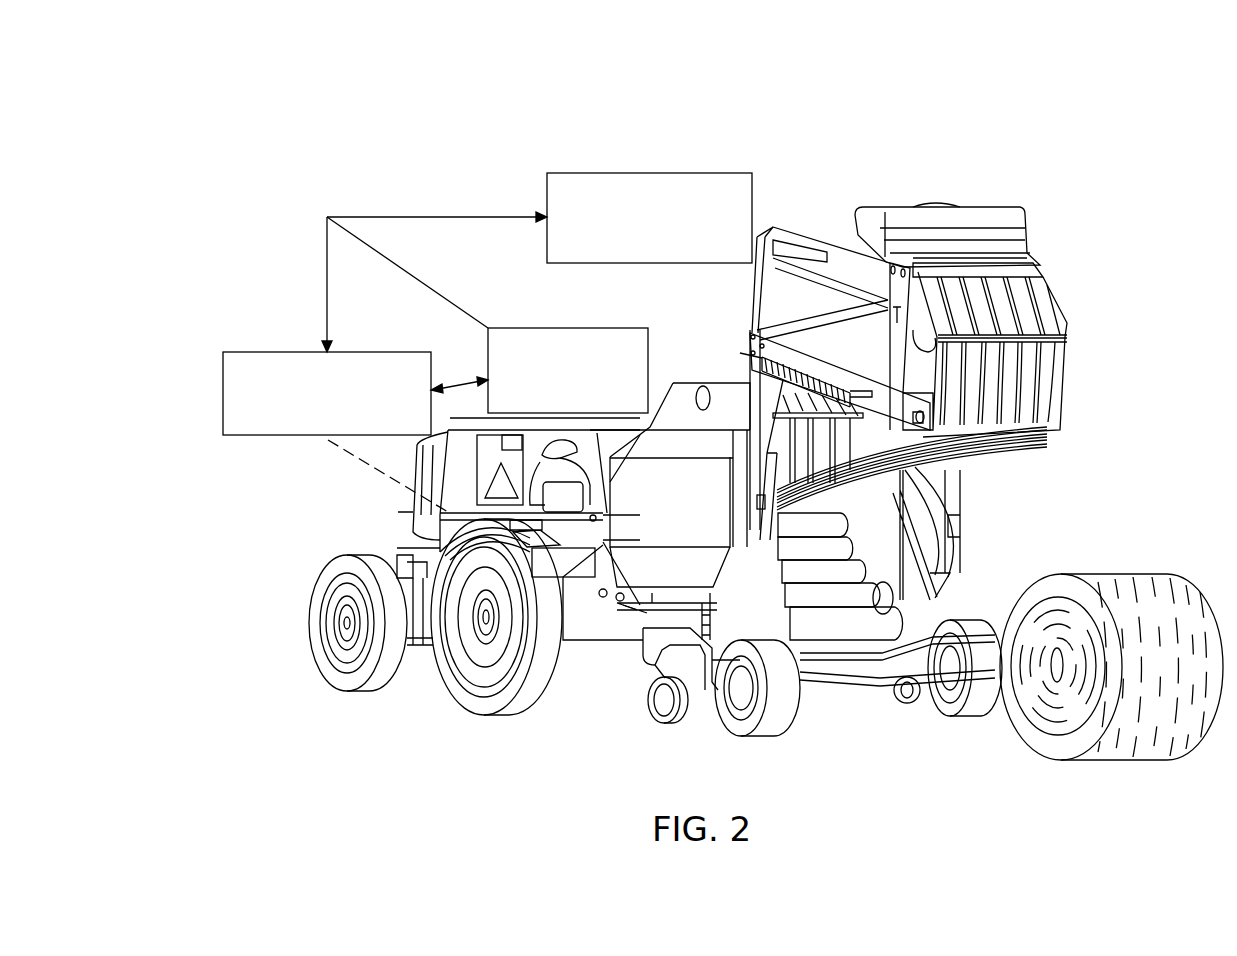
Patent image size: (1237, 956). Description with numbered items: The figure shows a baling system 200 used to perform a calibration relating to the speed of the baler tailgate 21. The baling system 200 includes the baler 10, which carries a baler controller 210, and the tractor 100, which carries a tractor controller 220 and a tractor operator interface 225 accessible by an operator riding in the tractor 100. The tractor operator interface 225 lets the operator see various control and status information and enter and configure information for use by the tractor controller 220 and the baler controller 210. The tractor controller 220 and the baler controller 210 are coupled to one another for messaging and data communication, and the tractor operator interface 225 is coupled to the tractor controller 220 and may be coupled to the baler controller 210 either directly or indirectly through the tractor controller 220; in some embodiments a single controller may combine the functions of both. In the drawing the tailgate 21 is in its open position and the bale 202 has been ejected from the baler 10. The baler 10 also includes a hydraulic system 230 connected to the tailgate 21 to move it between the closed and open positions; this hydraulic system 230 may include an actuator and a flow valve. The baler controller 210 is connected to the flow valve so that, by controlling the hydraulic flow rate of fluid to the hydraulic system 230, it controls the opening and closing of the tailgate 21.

The baling system 200 is at (338, 117).
The baler controller 210 is at (650, 172).
The tractor controller 220 is at (265, 352).
The tractor operator interface 225 is at (565, 328).
The hydraulic system 230 is at (762, 502).
The baler tailgate 21 is at (850, 270).
The bale 202 is at (1105, 573).
The tractor 100 is at (411, 696).
The baler 10 is at (636, 703).